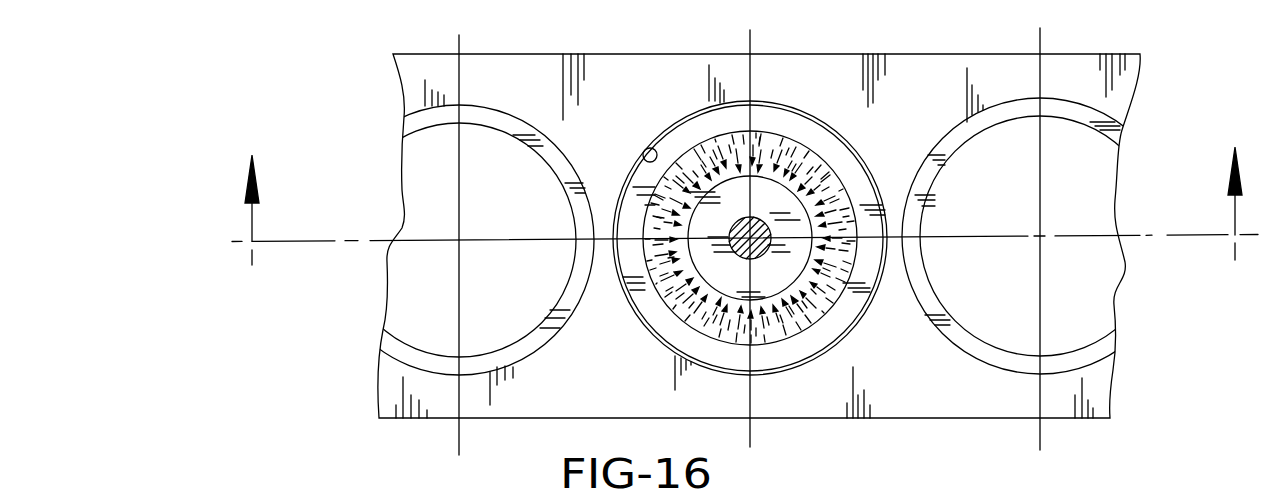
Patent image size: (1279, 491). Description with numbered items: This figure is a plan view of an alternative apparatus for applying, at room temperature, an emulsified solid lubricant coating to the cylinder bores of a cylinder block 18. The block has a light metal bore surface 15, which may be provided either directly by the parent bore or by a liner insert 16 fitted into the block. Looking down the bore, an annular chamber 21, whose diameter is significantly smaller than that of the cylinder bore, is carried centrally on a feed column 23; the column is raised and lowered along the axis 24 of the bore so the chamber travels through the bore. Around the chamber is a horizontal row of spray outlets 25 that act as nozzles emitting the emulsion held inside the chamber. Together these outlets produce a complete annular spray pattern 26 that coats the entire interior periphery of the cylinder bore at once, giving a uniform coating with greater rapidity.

The bore surface 15 is at (652, 148).
The liner insert 16 is at (577, 294).
The cylinder block 18 is at (530, 375).
The annular chamber 21 is at (822, 178).
The feed column 23 is at (762, 222).
The axis 24 is at (752, 423).
The spray outlets 25 is at (733, 172).
The annular spray pattern 26 is at (857, 325).